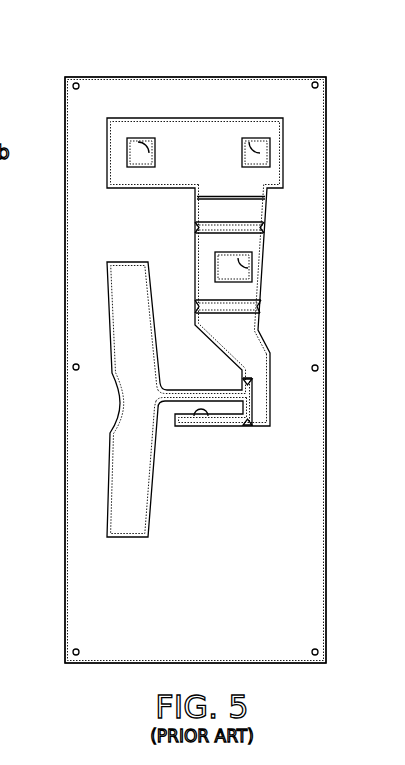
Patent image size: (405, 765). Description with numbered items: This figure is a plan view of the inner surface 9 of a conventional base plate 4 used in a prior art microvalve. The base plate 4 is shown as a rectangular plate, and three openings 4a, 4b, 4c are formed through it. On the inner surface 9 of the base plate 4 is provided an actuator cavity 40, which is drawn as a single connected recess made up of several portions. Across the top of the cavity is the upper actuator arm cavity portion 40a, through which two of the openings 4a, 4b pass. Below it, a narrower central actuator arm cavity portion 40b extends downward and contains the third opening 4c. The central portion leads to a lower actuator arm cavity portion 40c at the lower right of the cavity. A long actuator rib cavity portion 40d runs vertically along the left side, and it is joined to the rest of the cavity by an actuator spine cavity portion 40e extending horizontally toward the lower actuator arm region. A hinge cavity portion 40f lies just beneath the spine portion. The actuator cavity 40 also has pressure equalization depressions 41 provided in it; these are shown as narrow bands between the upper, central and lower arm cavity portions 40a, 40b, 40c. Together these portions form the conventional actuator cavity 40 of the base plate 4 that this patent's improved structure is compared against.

The base plate 4 is at (112, 77).
The inner surface 9 is at (273, 90).
The actuator cavity 40 is at (179, 138).
The upper actuator arm cavity portion 40a is at (204, 161).
The central actuator arm cavity portion 40b is at (290, 277).
The lower actuator arm cavity portion 40c is at (260, 405).
The actuator rib cavity portion 40d is at (125, 495).
The actuator spine cavity portion 40e is at (195, 402).
The hinge cavity portion 40f is at (192, 420).
The pressure equalization depressions 41 is at (235, 221).
The opening 4a is at (137, 153).
The opening 4b is at (252, 154).
The opening 4c is at (232, 288).